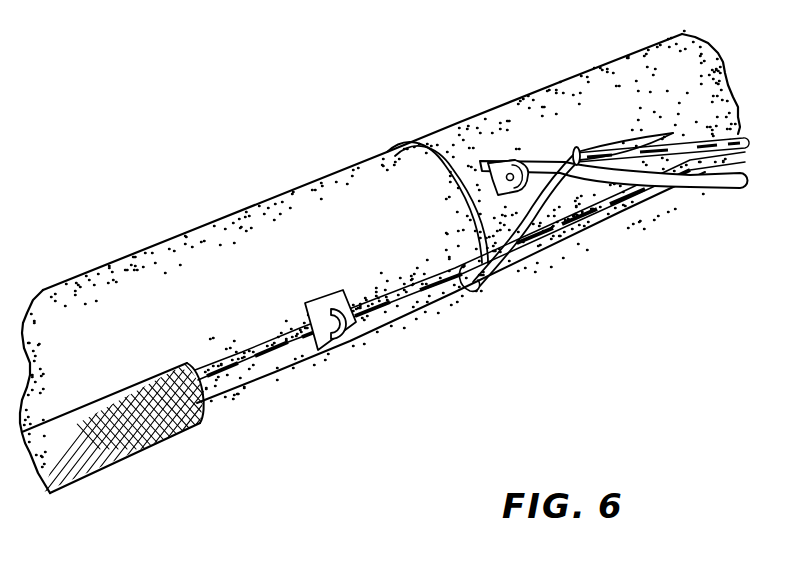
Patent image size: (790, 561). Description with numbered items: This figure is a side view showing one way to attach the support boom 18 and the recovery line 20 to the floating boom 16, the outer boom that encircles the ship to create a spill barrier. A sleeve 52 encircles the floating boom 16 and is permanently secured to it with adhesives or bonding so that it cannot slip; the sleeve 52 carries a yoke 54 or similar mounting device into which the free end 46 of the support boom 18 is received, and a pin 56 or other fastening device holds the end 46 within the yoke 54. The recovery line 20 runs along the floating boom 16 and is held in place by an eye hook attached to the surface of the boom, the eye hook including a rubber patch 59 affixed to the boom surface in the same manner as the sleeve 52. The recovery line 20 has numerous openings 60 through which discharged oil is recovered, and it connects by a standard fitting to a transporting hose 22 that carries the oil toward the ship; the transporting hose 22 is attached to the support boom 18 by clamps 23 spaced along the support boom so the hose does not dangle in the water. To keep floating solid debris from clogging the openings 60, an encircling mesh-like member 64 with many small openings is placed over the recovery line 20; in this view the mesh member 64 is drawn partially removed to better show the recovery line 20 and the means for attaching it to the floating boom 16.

The floating boom 16 is at (296, 208).
The support boom 18 is at (718, 178).
The recovery line 20 is at (235, 364).
The transporting hose 22 is at (474, 279).
The clamp 23 is at (576, 148).
The end of support boom 46 is at (553, 148).
The sleeve 52 is at (440, 134).
The yoke 54 is at (510, 160).
The pin 56 is at (488, 163).
The rubber patch 59 is at (330, 297).
The openings 60 is at (266, 368).
The mesh member 64 is at (121, 392).